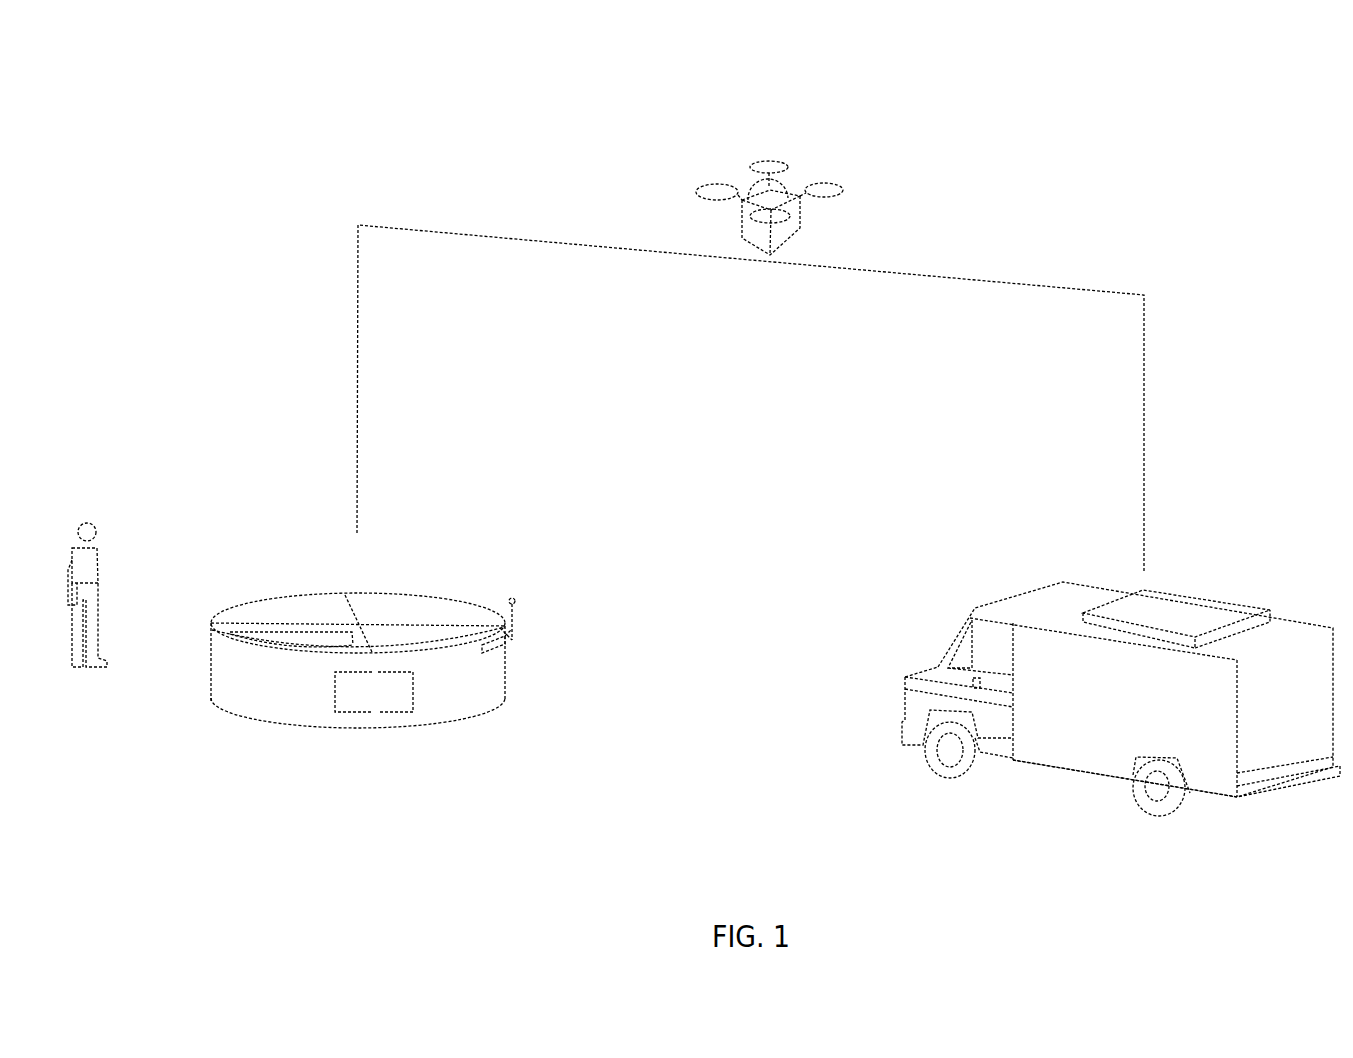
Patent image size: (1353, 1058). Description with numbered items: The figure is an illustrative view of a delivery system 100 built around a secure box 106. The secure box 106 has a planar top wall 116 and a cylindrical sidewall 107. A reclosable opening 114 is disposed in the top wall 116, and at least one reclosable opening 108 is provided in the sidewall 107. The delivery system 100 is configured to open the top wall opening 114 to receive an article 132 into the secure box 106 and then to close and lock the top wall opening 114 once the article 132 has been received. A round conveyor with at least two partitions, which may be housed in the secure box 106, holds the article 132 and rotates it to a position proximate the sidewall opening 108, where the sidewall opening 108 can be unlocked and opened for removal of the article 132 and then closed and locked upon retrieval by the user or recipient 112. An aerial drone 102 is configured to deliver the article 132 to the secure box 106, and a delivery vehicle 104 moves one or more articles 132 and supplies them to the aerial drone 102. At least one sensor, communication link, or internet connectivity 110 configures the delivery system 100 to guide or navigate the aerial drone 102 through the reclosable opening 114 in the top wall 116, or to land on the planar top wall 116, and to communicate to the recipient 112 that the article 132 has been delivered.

The delivery system 100 is at (430, 193).
The aerial drone 102 is at (849, 152).
The article 132 is at (787, 230).
The delivery vehicle 104 is at (1042, 707).
The secure box 106 is at (487, 597).
The cylindrical sidewall 107 is at (247, 670).
The reclosable opening 108 is at (372, 692).
The sensor, communication link, or internet connectivity 110 is at (503, 650).
The recipient 112 is at (95, 527).
The reclosable opening 114 is at (305, 632).
The planar top wall 116 is at (388, 610).